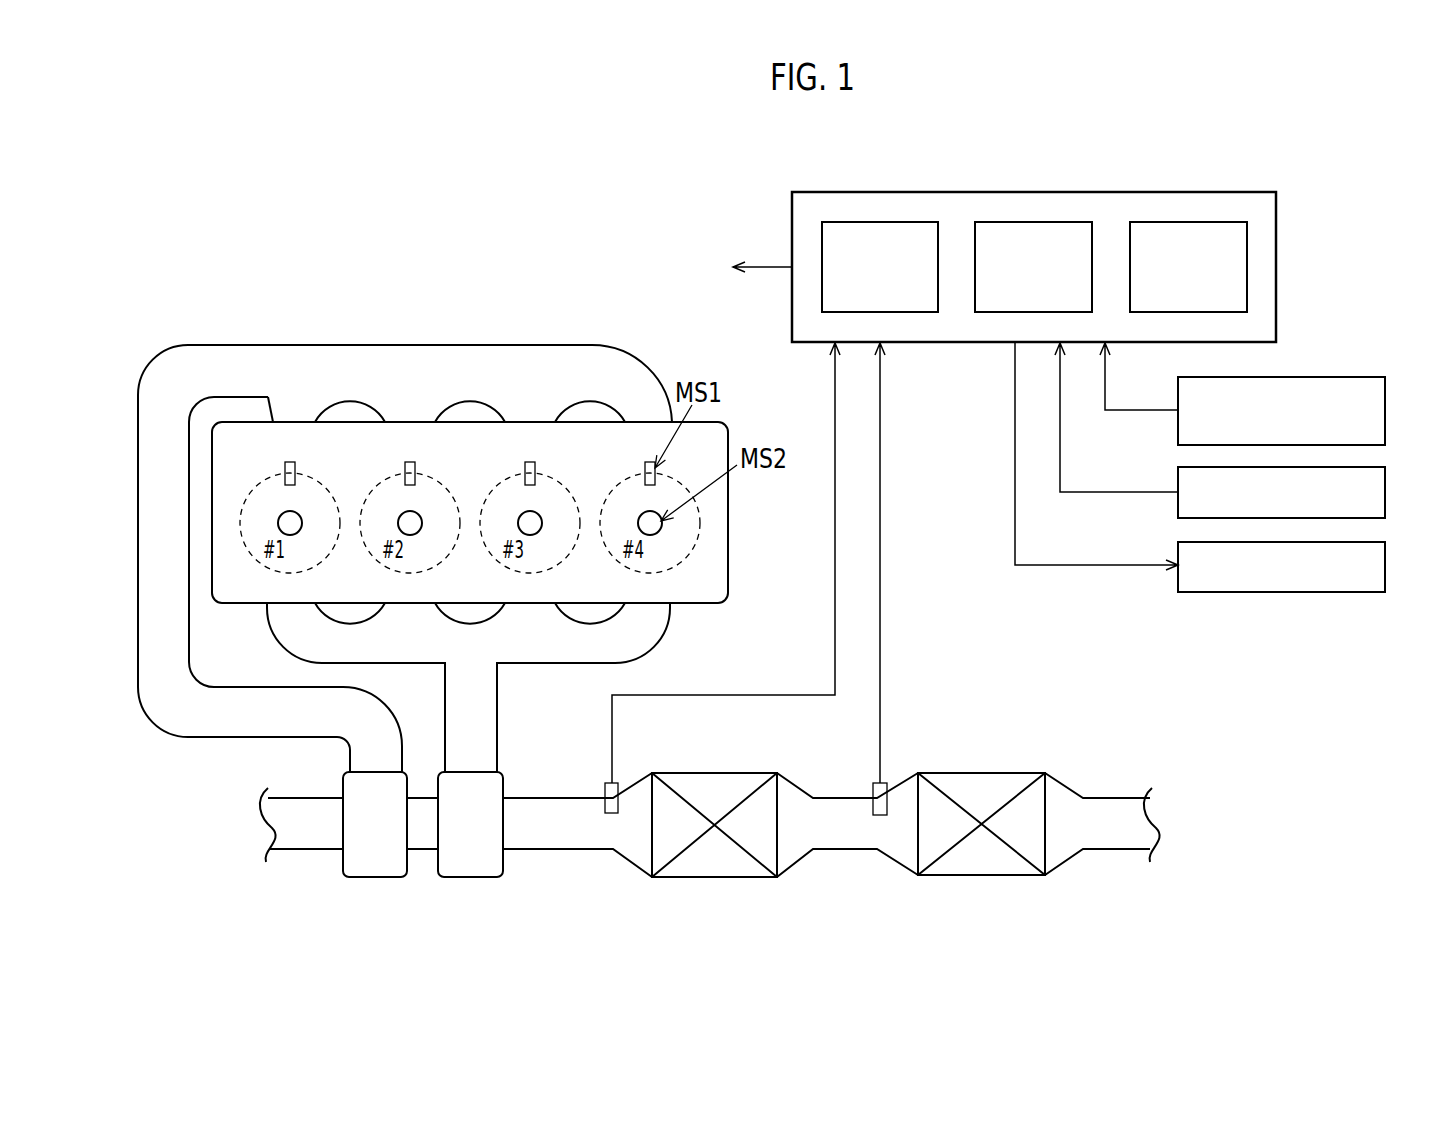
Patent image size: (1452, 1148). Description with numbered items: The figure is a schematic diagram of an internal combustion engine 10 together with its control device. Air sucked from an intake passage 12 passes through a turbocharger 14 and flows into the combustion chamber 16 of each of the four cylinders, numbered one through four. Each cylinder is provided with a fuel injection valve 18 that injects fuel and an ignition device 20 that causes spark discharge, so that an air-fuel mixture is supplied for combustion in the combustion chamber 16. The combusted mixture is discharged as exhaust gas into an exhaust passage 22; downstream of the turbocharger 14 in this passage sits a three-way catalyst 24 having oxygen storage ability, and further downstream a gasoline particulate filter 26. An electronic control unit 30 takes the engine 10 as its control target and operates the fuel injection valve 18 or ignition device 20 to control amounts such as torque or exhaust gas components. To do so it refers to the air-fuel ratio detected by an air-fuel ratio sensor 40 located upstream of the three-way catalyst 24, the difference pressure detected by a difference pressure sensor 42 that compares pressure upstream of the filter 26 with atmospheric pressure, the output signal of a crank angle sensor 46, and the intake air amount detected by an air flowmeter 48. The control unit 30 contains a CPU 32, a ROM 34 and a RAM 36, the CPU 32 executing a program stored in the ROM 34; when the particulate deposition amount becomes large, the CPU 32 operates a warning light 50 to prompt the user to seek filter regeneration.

The internal combustion engine 10 is at (520, 279).
The intake passage 12 is at (290, 848).
The turbocharger 14 is at (413, 882).
The combustion chamber 16 is at (252, 510).
The fuel injection valve 18 is at (290, 462).
The ignition device 20 is at (302, 523).
The exhaust passage 22 is at (666, 634).
The three-way catalyst 24 is at (710, 862).
The gasoline particulate filter 26 is at (977, 863).
The electronic control unit 30 is at (1252, 192).
The central processing unit 32 is at (880, 222).
The read only memory 34 is at (1033, 222).
The random access memory 36 is at (1188, 222).
The air-fuel ratio sensor 40 is at (604, 781).
The difference pressure sensor 42 is at (872, 781).
The crank angle sensor 46 is at (1385, 410).
The air flowmeter 48 is at (1385, 495).
The warning light 50 is at (1385, 567).